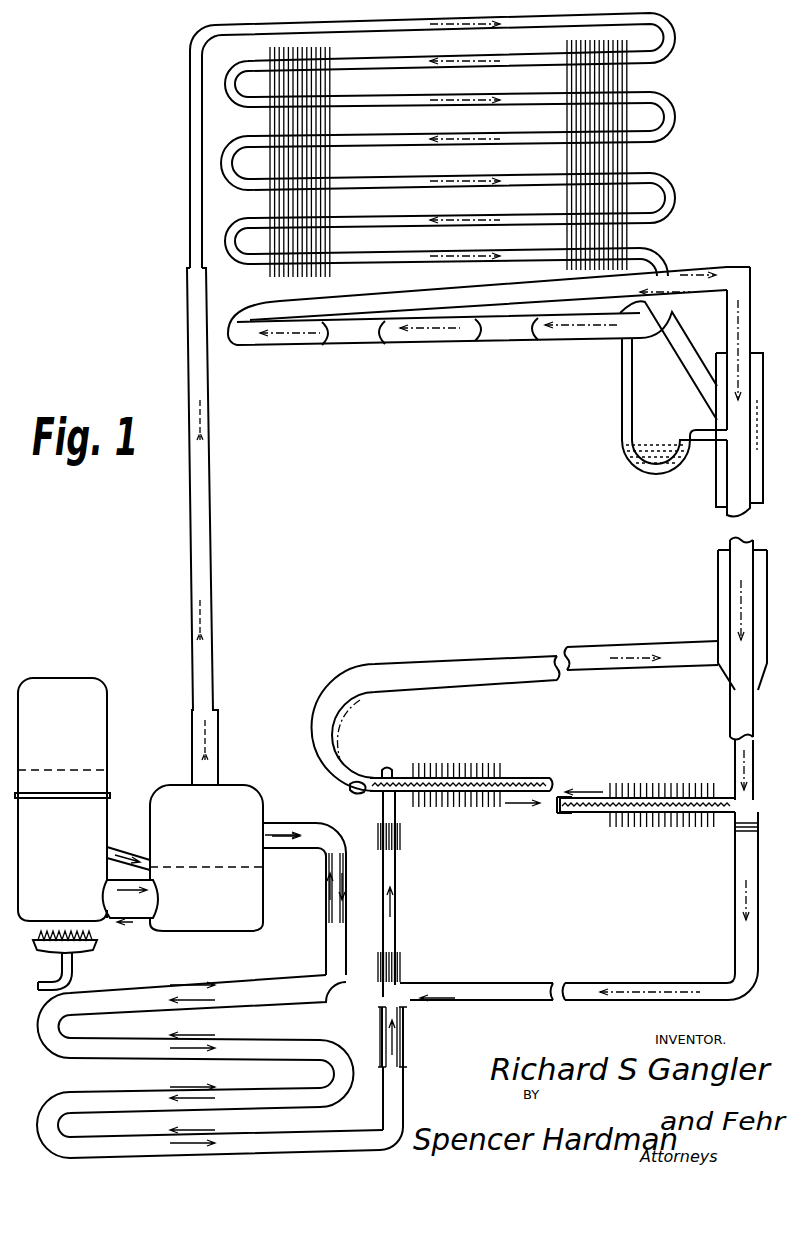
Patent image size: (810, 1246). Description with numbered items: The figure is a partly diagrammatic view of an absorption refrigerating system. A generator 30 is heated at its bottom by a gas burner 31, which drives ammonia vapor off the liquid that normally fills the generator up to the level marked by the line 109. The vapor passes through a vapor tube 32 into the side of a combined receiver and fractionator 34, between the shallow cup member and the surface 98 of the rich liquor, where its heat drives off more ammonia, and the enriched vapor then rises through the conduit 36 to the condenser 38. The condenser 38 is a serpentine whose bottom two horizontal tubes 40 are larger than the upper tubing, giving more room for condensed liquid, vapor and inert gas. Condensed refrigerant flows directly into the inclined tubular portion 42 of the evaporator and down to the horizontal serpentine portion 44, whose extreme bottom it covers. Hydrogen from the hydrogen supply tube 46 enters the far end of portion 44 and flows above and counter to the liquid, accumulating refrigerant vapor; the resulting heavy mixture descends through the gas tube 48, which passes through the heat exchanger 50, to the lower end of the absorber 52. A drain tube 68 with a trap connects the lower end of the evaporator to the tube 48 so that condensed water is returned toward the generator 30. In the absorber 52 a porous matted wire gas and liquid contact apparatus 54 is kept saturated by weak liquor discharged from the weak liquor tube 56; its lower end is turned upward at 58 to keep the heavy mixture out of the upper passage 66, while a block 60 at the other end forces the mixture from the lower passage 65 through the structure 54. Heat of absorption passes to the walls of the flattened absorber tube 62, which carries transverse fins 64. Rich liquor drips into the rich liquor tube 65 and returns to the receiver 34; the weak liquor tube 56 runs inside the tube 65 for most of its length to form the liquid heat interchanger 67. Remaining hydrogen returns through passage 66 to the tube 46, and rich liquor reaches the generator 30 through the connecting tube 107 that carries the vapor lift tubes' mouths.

The generator 30 is at (86, 693).
The gas burner 31 is at (77, 947).
The vapor tube 32 is at (128, 853).
The combined receiver and fractionator 34 is at (168, 798).
The vapor conduit 36 is at (203, 563).
The condenser 38 is at (666, 111).
The bottom horizontal tubes 40 is at (640, 226).
The inclined tubular portion of the evaporator 42 is at (280, 305).
The horizontal portion of the evaporator 44 is at (440, 336).
The hydrogen supply tube 46 is at (687, 372).
The gas tube 48 is at (745, 322).
The heat exchanger 50 is at (727, 561).
The absorber 52 is at (603, 847).
The gas and liquid contact apparatus 54 is at (530, 780).
The weak liquor tube 56 is at (333, 910).
The upturned end of matted wire 58 is at (753, 807).
The block 60 is at (352, 791).
The flattened absorber tube 62 is at (403, 778).
The transverse fins 64 is at (450, 767).
The rich liquor tube 65 is at (303, 806).
The upper passage 66 is at (513, 777).
The liquid heat interchanger 67 is at (80, 1050).
The drain tube 68 is at (622, 427).
The surface of the liquid 98 is at (247, 870).
The connecting tube 107 is at (149, 906).
The liquid level line 109 is at (92, 768).